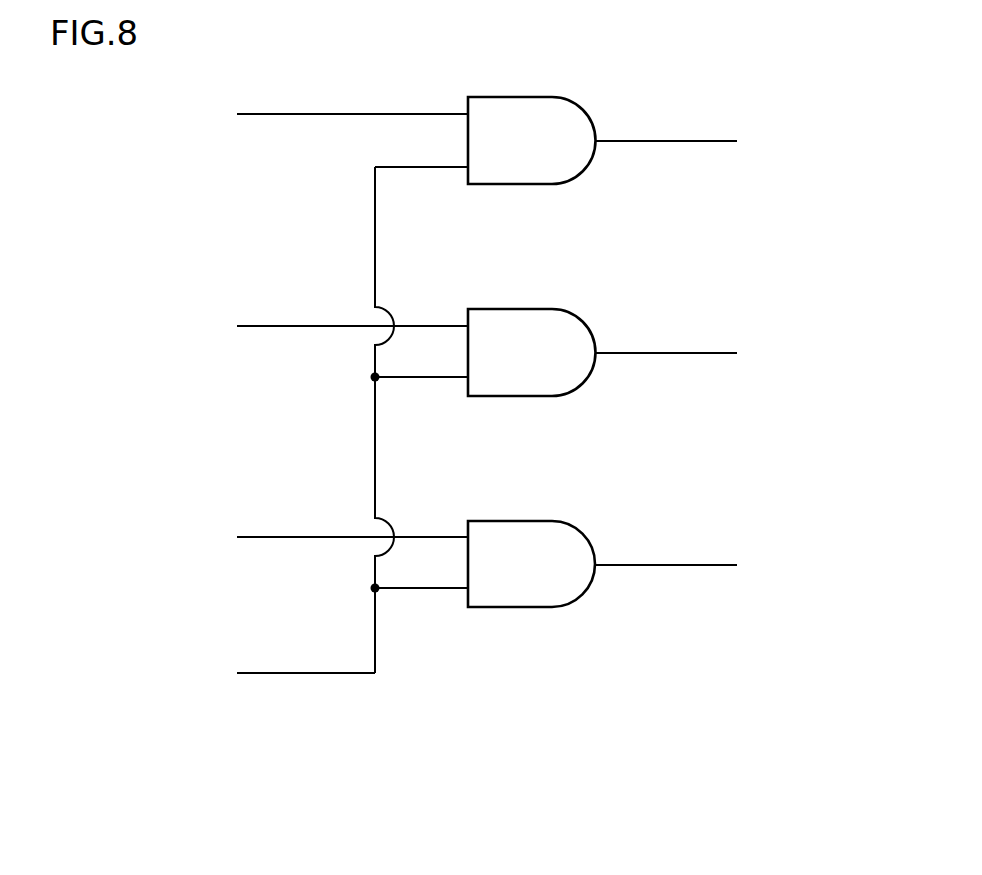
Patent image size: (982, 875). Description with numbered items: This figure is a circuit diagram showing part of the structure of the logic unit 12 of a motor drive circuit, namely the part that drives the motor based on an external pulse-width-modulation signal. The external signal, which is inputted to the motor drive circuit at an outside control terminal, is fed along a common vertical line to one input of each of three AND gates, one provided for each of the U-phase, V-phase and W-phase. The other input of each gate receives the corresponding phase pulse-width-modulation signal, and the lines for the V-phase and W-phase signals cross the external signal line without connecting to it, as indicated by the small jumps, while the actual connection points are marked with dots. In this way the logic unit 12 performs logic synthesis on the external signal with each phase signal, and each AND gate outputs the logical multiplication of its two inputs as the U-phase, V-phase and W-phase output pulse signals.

The logic unit 12 is at (471, 478).